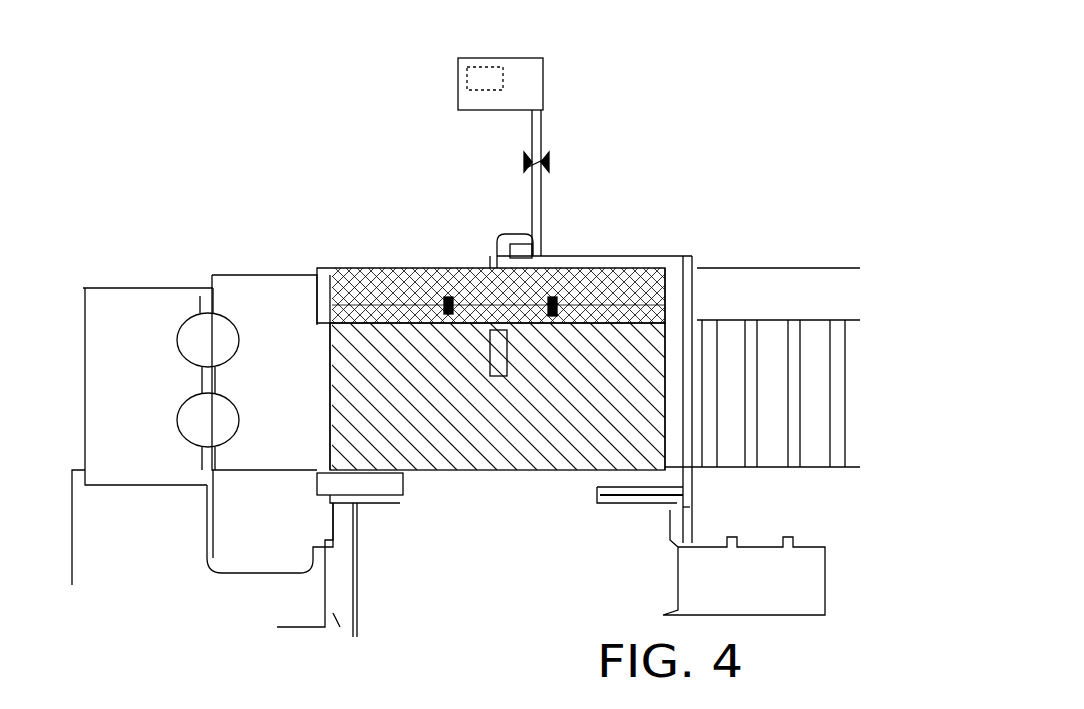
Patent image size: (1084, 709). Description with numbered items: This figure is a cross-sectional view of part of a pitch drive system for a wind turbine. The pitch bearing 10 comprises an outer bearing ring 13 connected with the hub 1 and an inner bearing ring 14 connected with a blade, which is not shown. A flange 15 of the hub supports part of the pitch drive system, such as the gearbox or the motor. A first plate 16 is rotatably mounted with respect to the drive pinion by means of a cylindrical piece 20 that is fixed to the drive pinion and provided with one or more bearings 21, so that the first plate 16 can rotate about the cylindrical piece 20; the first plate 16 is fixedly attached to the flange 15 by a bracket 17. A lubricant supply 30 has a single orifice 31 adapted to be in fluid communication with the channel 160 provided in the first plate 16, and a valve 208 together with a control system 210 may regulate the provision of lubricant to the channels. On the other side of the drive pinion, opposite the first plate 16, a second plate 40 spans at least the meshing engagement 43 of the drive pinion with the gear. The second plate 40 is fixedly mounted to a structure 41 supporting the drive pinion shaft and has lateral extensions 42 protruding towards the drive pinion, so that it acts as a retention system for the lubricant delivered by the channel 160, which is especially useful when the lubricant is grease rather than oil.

The hub 1 is at (88, 568).
The pitch bearing 10 is at (160, 287).
The outer bearing ring 13 is at (83, 325).
The inner bearing ring 14 is at (292, 285).
The flange 15 is at (800, 577).
The first plate 16 is at (692, 258).
The bracket 17 is at (690, 507).
The cylindrical piece 20 is at (520, 282).
The bearings 21 is at (545, 310).
The lubricant supply 30 is at (500, 238).
The orifice 31 is at (491, 264).
The second plate 40 is at (351, 589).
The structure 41 is at (598, 490).
The lateral extensions 42 is at (320, 485).
The meshing engagement 43 is at (325, 406).
The channel 160 is at (372, 283).
The valve 208 is at (547, 163).
The control system 210 is at (465, 80).